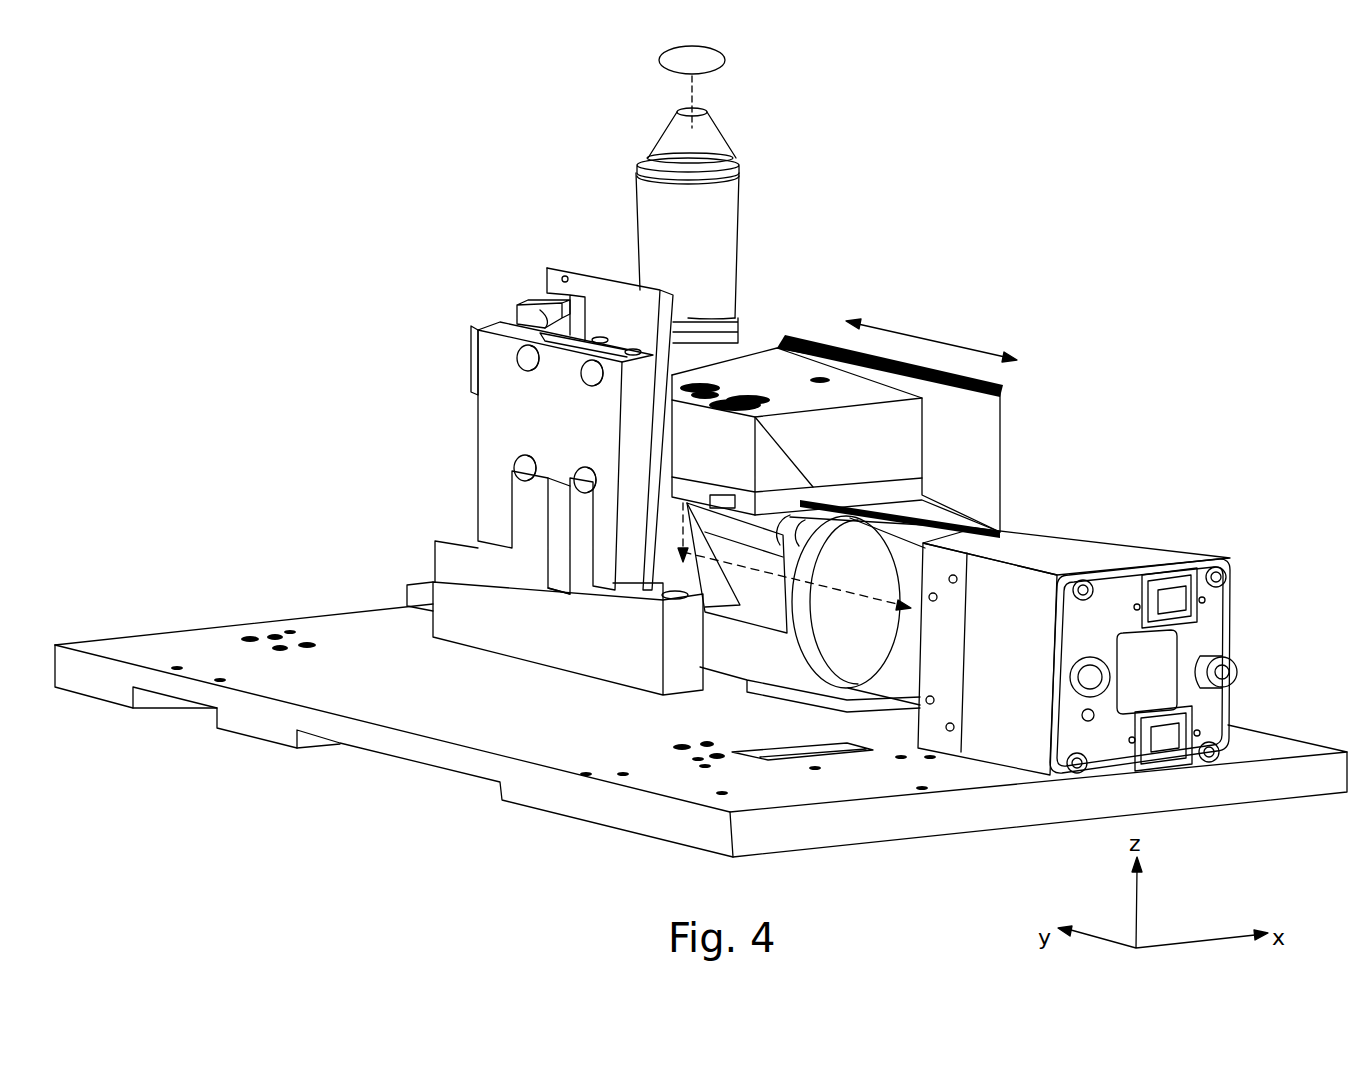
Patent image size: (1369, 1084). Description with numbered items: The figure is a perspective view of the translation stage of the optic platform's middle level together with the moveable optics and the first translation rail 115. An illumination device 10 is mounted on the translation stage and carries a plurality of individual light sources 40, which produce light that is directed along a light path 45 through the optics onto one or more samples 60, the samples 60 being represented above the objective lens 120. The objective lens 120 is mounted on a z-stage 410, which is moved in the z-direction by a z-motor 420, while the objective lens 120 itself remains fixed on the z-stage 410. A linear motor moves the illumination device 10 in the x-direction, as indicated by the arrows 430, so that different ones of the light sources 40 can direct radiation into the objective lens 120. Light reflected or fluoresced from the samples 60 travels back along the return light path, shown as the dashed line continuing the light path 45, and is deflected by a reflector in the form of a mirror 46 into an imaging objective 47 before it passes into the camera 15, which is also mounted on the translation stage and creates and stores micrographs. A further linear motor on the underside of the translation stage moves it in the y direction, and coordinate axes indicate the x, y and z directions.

The illumination device 10 is at (837, 433).
The camera 15 is at (1077, 651).
The light sources 40 is at (713, 388).
The light path 45 is at (794, 348).
The mirror 46 is at (688, 568).
The imaging objective 47 is at (860, 655).
The samples 60 is at (708, 60).
The first translation rail 115 is at (952, 524).
The objective lens 120 is at (687, 225).
The z-stage 410 is at (612, 300).
The z-motor 420 is at (545, 312).
The arrows 430 is at (931, 337).